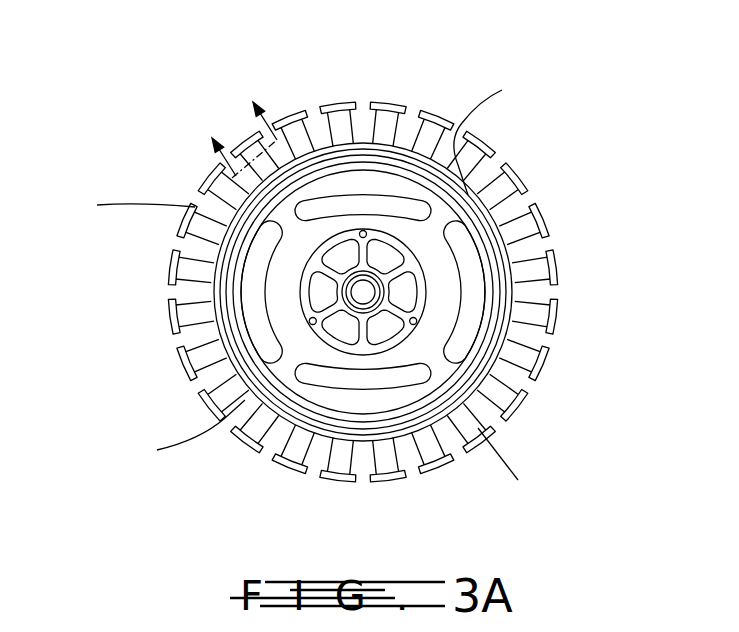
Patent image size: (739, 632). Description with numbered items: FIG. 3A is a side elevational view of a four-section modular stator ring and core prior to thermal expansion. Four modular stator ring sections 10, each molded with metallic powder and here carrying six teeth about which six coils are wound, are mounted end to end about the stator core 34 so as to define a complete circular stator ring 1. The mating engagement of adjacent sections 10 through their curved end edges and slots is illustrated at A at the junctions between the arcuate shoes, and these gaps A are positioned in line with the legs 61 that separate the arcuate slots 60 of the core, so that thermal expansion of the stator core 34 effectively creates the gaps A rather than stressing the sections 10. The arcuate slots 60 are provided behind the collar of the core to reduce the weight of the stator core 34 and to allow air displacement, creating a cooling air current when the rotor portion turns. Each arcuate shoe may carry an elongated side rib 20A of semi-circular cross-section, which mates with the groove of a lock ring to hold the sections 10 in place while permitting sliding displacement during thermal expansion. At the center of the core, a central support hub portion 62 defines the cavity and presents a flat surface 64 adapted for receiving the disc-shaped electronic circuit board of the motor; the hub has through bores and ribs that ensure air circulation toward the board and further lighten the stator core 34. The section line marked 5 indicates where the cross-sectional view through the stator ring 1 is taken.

The stator ring 1 is at (153, 156).
The section line 5- 5 is at (230, 133).
The modular stator ring section 10 is at (409, 80).
The side rib 20A is at (314, 420).
The stator core 34 is at (365, 207).
The arcuate slots 60 is at (220, 270).
The legs 61 is at (263, 393).
The central support hub portion 62 is at (432, 290).
The flat surface 64 is at (337, 347).
The gaps A is at (303, 286).